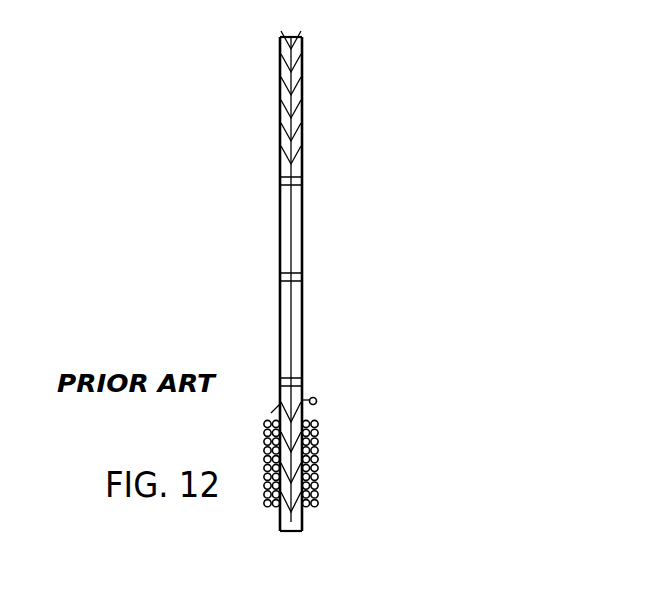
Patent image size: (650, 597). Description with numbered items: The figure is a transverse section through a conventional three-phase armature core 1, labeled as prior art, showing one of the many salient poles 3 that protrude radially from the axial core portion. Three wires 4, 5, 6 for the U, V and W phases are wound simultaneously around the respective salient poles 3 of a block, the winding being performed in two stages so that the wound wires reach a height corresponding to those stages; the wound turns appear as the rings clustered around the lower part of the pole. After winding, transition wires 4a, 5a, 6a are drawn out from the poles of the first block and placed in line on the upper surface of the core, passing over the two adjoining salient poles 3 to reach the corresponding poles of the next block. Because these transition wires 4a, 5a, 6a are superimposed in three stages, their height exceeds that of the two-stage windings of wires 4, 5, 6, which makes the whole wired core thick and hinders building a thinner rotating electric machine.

The armature core 1 is at (273, 298).
The salient pole 3 is at (302, 74).
The transition wire 4a is at (383, 406).
The transition wire 5a is at (383, 406).
The transition wire 6a is at (330, 376).
The wire 4 is at (373, 463).
The wire 5 is at (373, 463).
The wire 6 is at (373, 463).